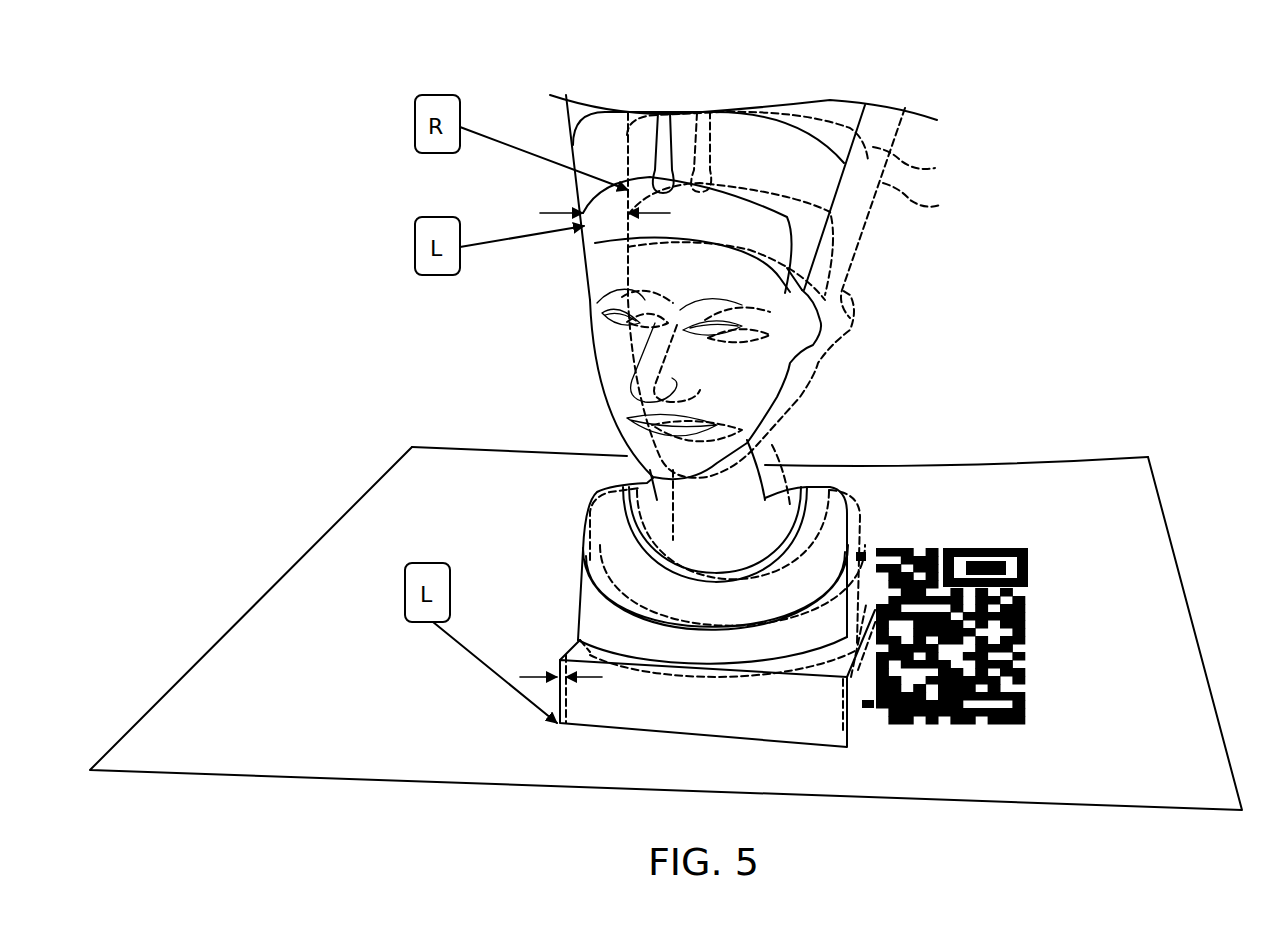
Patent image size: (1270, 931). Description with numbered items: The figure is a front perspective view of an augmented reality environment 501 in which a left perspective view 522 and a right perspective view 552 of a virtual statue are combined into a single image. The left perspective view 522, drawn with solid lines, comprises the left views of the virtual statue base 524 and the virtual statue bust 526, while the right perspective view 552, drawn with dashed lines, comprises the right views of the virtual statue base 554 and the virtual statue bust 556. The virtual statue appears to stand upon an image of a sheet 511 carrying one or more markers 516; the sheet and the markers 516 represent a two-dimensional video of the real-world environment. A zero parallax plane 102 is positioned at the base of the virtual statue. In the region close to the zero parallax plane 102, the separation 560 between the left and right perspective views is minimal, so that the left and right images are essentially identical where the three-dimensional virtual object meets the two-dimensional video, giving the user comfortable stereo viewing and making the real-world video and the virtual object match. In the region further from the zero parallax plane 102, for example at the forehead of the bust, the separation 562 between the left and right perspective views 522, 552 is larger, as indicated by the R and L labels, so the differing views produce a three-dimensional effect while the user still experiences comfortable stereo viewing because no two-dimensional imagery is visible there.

The augmented reality environment 501 is at (403, 55).
The planar surface / platform 511 is at (1137, 455).
The markers 516 is at (1035, 633).
The zero parallax plane 102 is at (557, 724).
The virtual statue bust 526 is at (590, 357).
The left perspective view 522 is at (575, 248).
The virtual statue base 524 is at (553, 668).
The separation near zero parallax 560 is at (590, 677).
The separation away from zero parallax 562 is at (578, 212).
The right perspective view 552 is at (905, 143).
The virtual statue base 554 is at (853, 717).
The virtual statue bust 556 is at (885, 185).